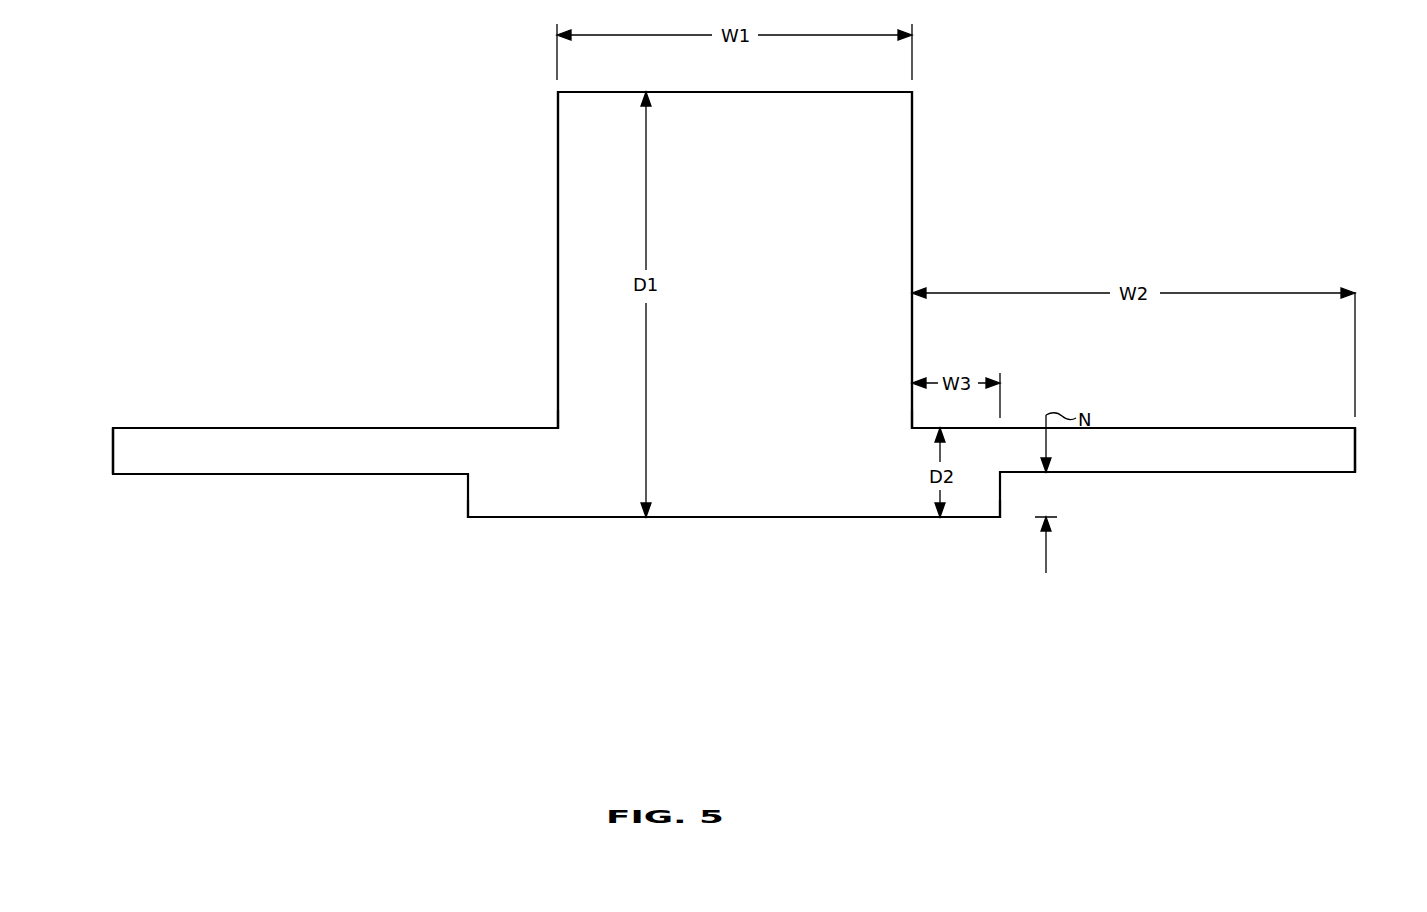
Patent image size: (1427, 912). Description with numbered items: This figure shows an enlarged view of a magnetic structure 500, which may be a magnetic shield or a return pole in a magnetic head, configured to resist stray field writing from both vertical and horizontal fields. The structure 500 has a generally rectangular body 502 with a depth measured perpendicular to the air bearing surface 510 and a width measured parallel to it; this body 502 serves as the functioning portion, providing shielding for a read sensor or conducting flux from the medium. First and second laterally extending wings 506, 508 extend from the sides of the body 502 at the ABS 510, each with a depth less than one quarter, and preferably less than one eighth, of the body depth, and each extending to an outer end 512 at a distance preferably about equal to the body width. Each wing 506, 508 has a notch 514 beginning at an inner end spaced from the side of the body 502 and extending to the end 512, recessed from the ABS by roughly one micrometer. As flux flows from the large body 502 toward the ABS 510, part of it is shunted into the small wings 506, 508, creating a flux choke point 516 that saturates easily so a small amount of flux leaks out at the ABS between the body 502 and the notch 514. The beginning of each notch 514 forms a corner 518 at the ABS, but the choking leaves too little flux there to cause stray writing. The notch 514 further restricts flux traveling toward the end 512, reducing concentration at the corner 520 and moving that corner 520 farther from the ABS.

The magnetic structure 500 is at (986, 106).
The rectangular body 502 is at (767, 234).
The first laterally extending wing 506 is at (1114, 450).
The second laterally extending wing 508 is at (196, 456).
The air bearing surface 510 is at (688, 518).
The outer end of wing 512 is at (113, 448).
The notch 514 is at (203, 475).
The flux choke point 516 is at (505, 456).
The corner at notch beginning 518 is at (467, 518).
The corner at wing end 520 is at (112, 476).